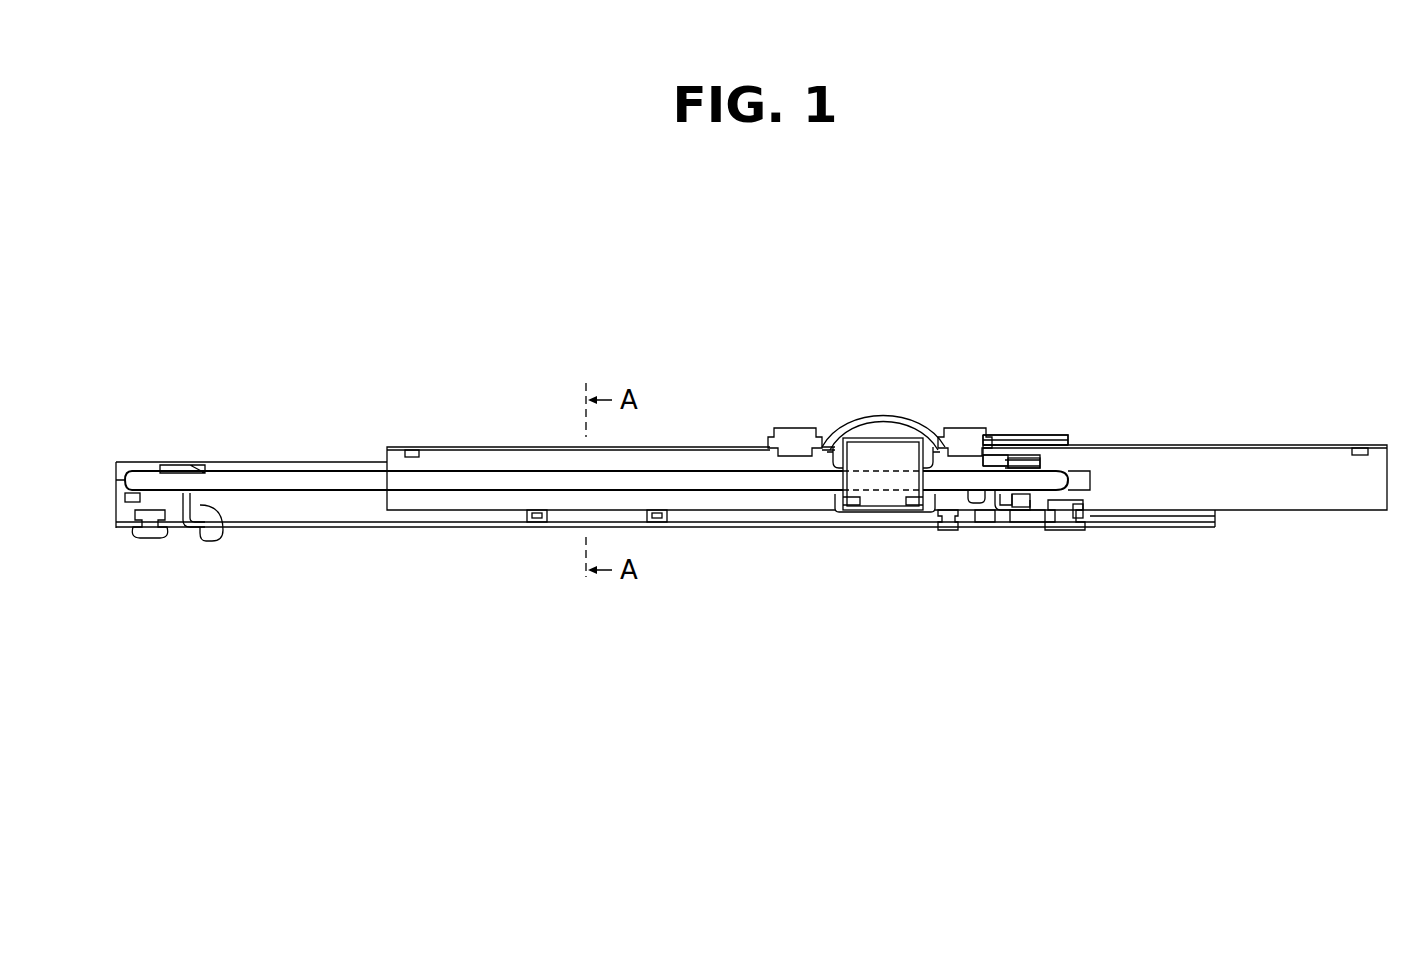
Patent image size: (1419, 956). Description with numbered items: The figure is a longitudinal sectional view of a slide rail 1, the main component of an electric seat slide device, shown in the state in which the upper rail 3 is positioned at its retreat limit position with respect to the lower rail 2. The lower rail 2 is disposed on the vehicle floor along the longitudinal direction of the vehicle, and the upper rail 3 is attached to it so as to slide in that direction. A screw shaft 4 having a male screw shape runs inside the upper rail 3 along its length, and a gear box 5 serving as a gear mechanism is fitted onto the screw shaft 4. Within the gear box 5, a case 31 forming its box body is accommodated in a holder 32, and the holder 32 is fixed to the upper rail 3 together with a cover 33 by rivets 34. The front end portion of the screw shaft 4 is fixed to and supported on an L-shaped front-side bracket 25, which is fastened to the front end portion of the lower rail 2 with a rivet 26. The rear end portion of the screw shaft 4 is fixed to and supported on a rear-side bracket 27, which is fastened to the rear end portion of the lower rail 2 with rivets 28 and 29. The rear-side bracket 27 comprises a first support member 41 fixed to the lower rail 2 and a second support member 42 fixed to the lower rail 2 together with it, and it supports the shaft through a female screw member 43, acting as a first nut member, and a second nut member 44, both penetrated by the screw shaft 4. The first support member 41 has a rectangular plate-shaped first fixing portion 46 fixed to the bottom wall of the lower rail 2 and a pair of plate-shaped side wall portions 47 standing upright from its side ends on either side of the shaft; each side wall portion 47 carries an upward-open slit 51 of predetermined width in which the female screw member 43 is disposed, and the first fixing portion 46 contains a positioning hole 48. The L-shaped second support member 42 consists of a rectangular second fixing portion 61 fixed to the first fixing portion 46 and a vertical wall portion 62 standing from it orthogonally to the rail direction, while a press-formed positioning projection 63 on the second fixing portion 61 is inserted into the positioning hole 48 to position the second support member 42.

The slide rail 1 is at (446, 436).
The lower rail 2 is at (290, 528).
The upper rail 3 is at (1225, 443).
The screw shaft 4 is at (237, 482).
The gear box 5 is at (853, 428).
The front-side bracket 25 is at (182, 523).
The rivet 26 is at (150, 540).
The rear-side bracket 27 is at (1001, 440).
The rivet 28 is at (1085, 486).
The rivet 29 is at (943, 528).
The case 31 is at (893, 450).
The holder 32 is at (838, 508).
The cover 33 is at (895, 418).
The rivets 34 is at (795, 432).
The first support member 41 is at (990, 512).
The second support member 42 is at (1017, 509).
The female screw member 43 is at (977, 505).
The second nut member 44 is at (1034, 464).
The first fixing portion 46 is at (983, 520).
The side wall portions 47 is at (1002, 507).
The positioning hole 48 is at (1037, 520).
The slit 51 is at (984, 455).
The second fixing portion 61 is at (1078, 512).
The vertical wall portion 62 is at (1018, 466).
The positioning projection 63 is at (1038, 518).